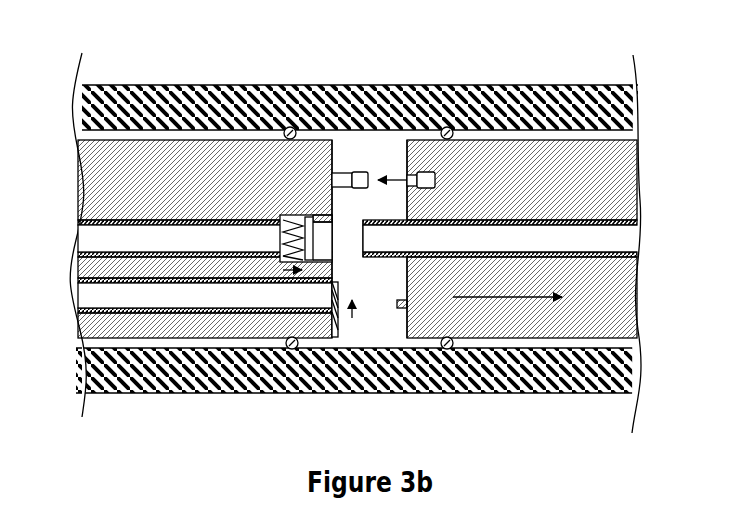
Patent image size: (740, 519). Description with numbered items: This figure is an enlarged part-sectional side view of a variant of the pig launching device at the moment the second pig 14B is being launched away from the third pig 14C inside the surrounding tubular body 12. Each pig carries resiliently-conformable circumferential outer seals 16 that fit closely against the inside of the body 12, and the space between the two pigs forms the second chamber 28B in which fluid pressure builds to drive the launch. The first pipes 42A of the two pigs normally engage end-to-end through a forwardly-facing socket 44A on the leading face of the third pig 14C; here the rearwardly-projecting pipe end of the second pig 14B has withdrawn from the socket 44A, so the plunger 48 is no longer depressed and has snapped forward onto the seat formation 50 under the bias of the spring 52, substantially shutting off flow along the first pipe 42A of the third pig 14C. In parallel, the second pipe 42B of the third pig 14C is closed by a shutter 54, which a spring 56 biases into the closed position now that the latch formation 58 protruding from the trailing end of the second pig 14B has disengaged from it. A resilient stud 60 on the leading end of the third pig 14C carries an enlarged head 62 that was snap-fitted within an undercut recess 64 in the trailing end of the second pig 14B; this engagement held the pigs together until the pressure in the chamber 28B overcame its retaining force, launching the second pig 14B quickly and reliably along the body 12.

The elongate tubular body 12 is at (527, 95).
The second pig 14B is at (558, 196).
The third pig 14C is at (205, 194).
The circumferential outer seals 16 is at (290, 133).
The second chamber 28B is at (395, 145).
The first pipes 42A is at (132, 237).
The second pipe 42B is at (100, 292).
The socket 44A is at (285, 220).
The plunger 48 is at (310, 217).
The seat formation 50 is at (334, 222).
The spring 52 is at (280, 225).
The shutter 54 is at (332, 305).
The spring 56 is at (338, 318).
The latch formation 58 is at (400, 300).
The resilient stud 60 is at (342, 173).
The enlarged head 62 is at (363, 172).
The undercut recess 64 is at (430, 183).